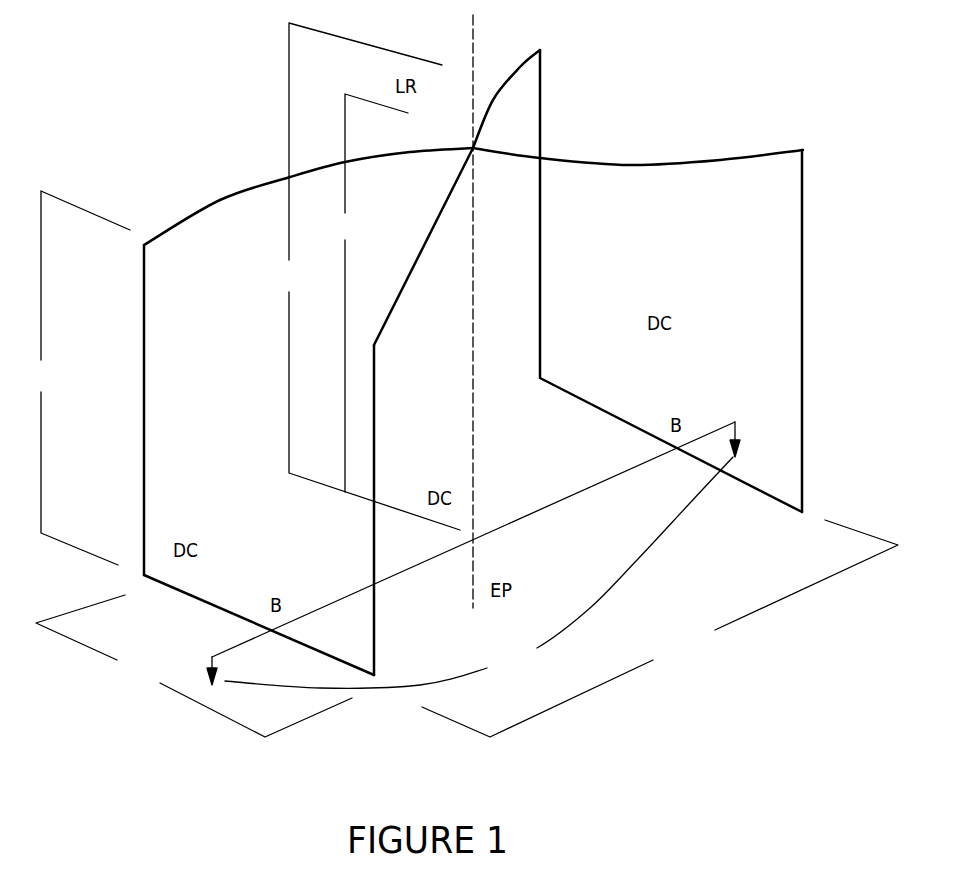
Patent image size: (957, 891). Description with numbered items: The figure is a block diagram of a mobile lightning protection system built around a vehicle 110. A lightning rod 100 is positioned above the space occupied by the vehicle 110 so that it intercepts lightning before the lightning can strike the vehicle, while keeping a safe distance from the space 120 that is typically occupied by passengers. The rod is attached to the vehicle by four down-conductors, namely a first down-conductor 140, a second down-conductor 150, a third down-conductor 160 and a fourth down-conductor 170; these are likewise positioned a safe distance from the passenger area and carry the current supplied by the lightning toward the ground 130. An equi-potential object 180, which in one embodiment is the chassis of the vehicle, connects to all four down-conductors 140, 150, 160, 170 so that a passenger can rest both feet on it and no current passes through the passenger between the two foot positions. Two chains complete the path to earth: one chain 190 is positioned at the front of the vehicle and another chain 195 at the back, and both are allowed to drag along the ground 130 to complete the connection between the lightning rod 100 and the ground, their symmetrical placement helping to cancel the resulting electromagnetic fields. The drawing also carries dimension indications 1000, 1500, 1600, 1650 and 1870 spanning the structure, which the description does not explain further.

The lightning rod 100 is at (470, 90).
The vehicle 110 is at (308, 411).
The passenger space 120 is at (588, 245).
The ground 130 is at (479, 572).
The first down-conductor 140 is at (144, 378).
The second down-conductor 150 is at (374, 552).
The third down-conductor 160 is at (540, 130).
The fourth down-conductor 170 is at (802, 392).
The equi-potential object 180 is at (553, 507).
The front chain 190 is at (212, 657).
The back chain 195 is at (735, 422).
The width dimension 1000 is at (194, 666).
The height dimension 1500 is at (76, 378).
The depth dimension 1600 is at (660, 628).
The height dimension 1650 is at (368, 293).
The height dimension 1870 is at (361, 276).